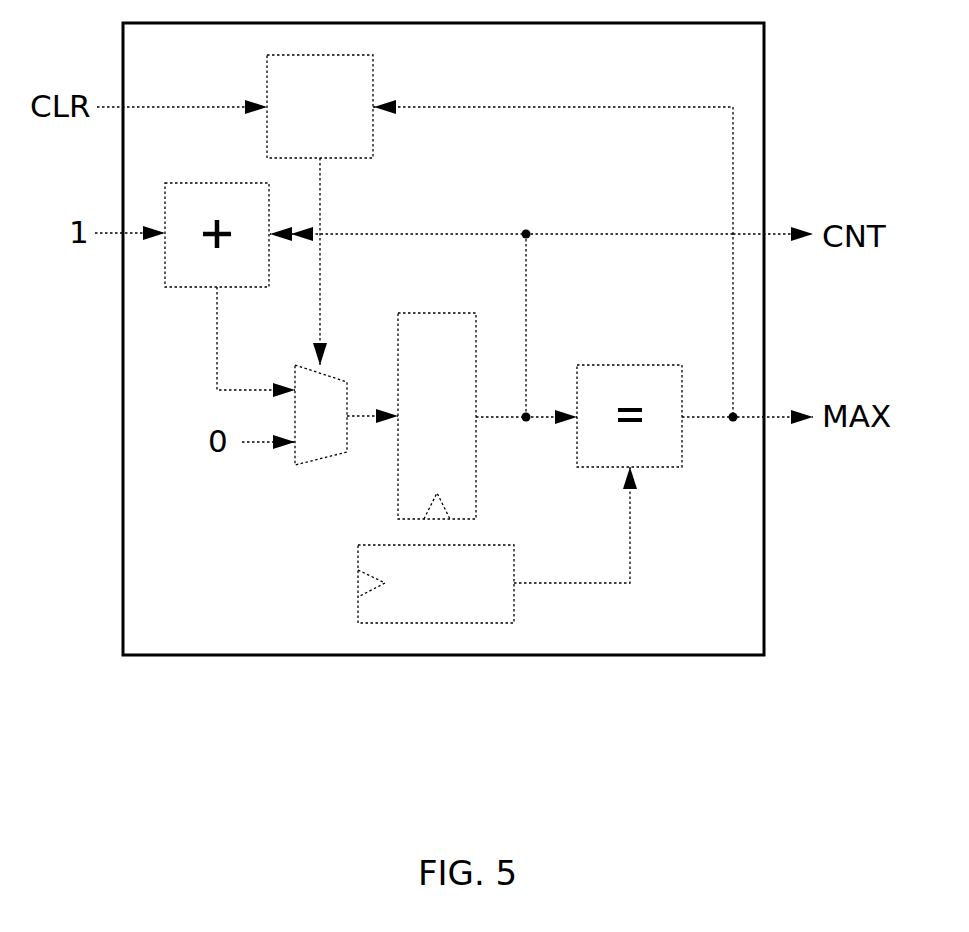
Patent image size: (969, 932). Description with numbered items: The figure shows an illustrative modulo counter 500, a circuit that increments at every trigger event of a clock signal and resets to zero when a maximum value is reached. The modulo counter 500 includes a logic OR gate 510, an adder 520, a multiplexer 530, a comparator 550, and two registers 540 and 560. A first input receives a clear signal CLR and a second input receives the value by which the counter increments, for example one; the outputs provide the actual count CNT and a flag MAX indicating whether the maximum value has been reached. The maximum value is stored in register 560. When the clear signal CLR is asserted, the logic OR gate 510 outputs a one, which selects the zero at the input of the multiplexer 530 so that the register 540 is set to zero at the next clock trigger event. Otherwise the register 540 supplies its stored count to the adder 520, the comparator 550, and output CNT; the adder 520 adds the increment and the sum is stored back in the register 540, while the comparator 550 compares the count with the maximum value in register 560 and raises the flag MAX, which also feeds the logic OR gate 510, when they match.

The modulo counter 500 is at (752, 69).
The logic OR gate 510 is at (376, 72).
The adder 520 is at (181, 289).
The multiplexer 530 is at (326, 461).
The register 540 is at (438, 312).
The comparator 550 is at (631, 364).
The register 560 is at (358, 604).